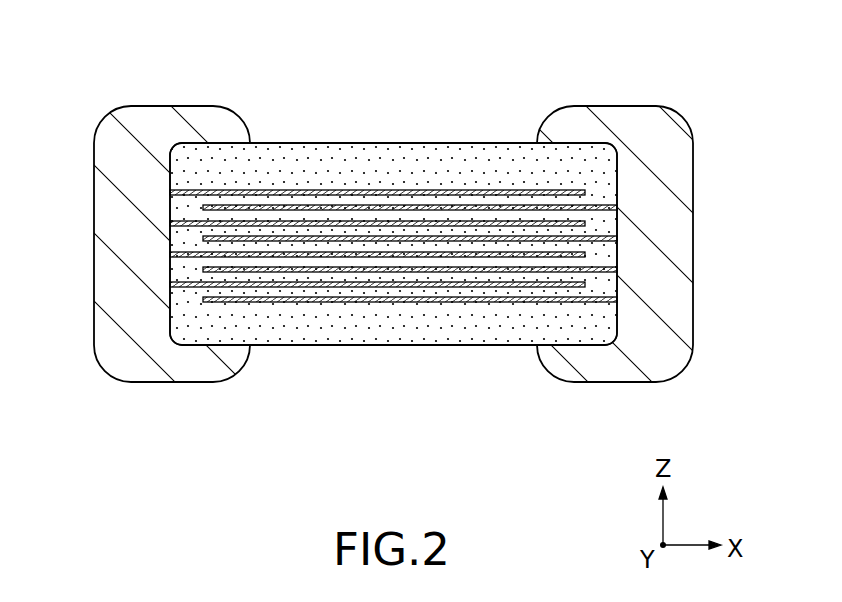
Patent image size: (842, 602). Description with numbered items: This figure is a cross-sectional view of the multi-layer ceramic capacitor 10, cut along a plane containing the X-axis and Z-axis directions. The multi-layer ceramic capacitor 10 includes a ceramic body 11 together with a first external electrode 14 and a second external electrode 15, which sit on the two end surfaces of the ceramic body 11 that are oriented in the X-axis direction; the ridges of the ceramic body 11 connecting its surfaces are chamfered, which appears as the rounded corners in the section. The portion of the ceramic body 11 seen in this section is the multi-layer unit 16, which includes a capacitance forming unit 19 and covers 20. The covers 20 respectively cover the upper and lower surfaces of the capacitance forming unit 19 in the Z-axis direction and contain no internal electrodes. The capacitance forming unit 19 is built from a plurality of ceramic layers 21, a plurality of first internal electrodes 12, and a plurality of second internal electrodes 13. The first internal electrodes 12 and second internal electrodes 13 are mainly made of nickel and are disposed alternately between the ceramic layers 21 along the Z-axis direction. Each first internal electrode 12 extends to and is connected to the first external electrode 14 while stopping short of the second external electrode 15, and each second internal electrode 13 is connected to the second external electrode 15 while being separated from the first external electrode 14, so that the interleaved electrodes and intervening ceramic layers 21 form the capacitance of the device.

The multi-layer ceramic capacitor 10 is at (116, 74).
The ceramic body 11 is at (369, 76).
The first internal electrodes 12 is at (328, 192).
The second internal electrodes 13 is at (515, 208).
The first external electrode 14 is at (110, 243).
The second external electrode 15 is at (694, 245).
The multi-layer unit 16 is at (332, 333).
The capacitance forming unit 19 is at (419, 241).
The covers 20 is at (620, 143).
The ceramic layers 21 is at (428, 200).